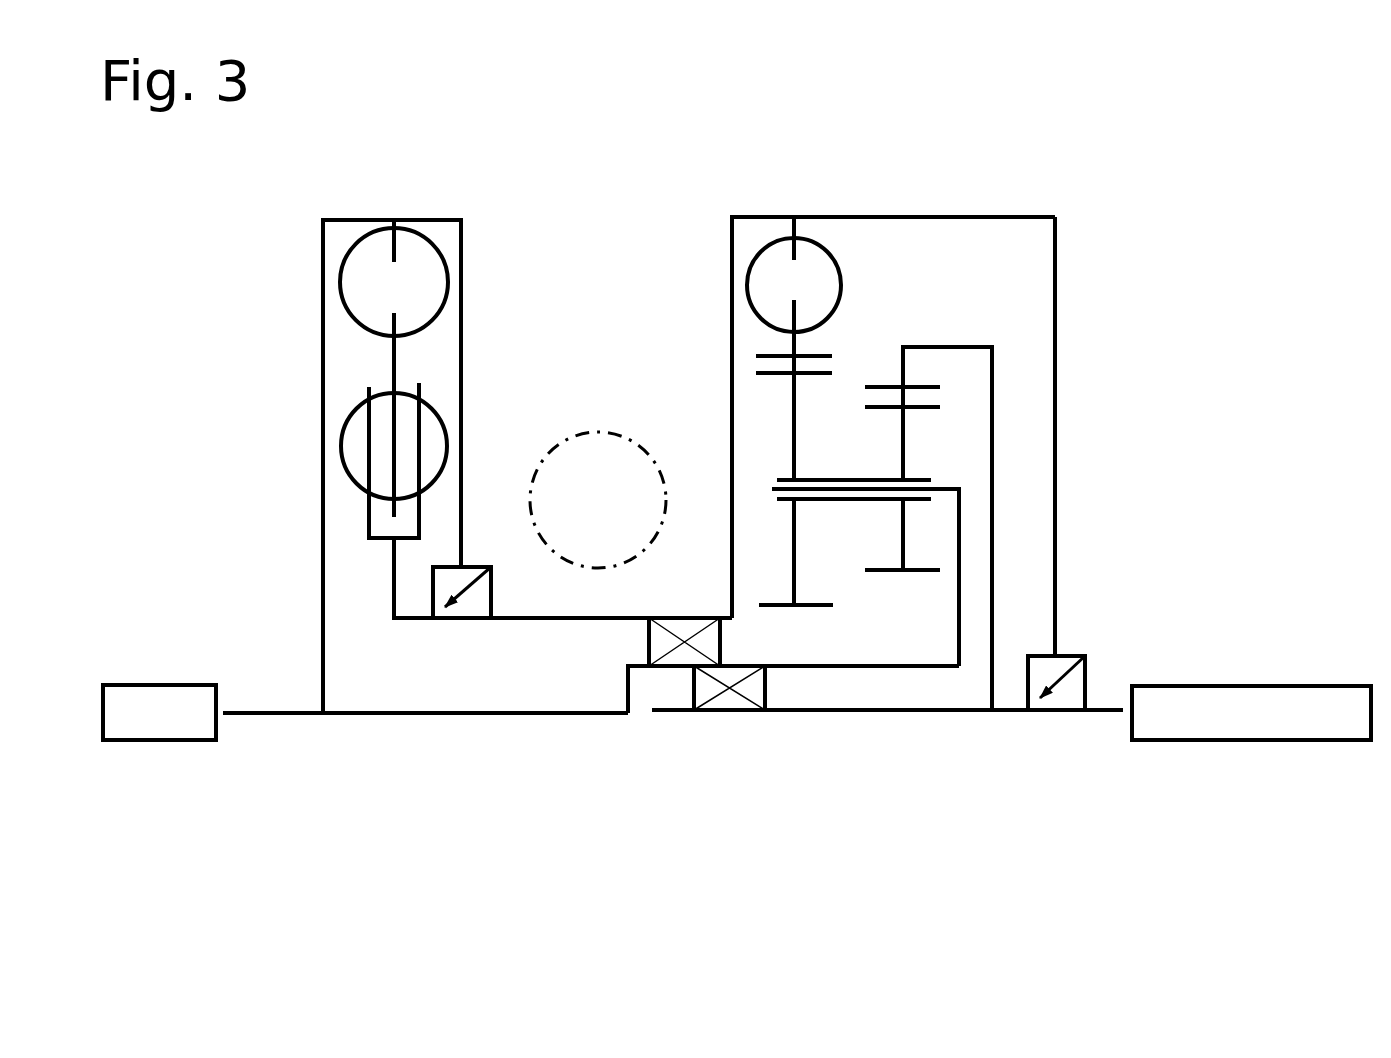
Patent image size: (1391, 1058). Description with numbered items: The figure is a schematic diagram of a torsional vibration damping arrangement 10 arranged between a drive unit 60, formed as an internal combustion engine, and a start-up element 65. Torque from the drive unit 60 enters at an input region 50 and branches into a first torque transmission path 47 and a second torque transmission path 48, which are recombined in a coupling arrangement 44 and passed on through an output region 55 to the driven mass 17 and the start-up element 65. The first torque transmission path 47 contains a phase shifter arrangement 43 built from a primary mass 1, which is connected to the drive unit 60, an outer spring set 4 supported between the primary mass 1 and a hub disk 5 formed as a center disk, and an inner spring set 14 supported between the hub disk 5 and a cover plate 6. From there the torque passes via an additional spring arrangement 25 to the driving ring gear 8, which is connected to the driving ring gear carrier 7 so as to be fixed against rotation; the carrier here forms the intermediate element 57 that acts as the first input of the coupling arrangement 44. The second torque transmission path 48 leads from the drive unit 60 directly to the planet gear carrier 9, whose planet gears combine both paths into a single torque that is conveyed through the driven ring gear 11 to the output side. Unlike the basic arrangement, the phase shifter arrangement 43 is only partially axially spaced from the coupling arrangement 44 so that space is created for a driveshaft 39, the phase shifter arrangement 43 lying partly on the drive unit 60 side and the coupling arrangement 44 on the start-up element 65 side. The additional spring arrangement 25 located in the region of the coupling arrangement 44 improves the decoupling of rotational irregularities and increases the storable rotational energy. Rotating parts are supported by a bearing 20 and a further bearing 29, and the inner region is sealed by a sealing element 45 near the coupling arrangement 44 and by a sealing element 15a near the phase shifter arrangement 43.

The primary mass 1 is at (323, 262).
The outer spring set 4 is at (443, 258).
The hub disk 5 is at (394, 355).
The cover plate 6 is at (366, 388).
The driving ring gear carrier 7 is at (781, 217).
The driving ring gear 8 is at (820, 353).
The planet gear carrier 9 is at (960, 560).
The torsional vibration damping arrangement 10 is at (622, 133).
The driven ring gear 11 is at (923, 385).
The inner spring set 14 is at (340, 447).
The sealing element 15a is at (450, 578).
The driven mass 17 is at (934, 712).
The bearing 20 is at (677, 660).
The additional spring arrangement 25 is at (837, 258).
The bearing 29 is at (757, 688).
The driveshaft 39 is at (600, 472).
The phase shifter arrangement 43 is at (338, 240).
The coupling arrangement 44 is at (1030, 293).
The sealing element 45 is at (1057, 663).
The first torque transmission path 47 is at (718, 420).
The second torque transmission path 48 is at (904, 722).
The input region 50 is at (272, 722).
The output region 55 is at (1102, 728).
The intermediate element 57 is at (754, 216).
The drive unit 60 is at (159, 712).
The start-up element 65 is at (1251, 713).